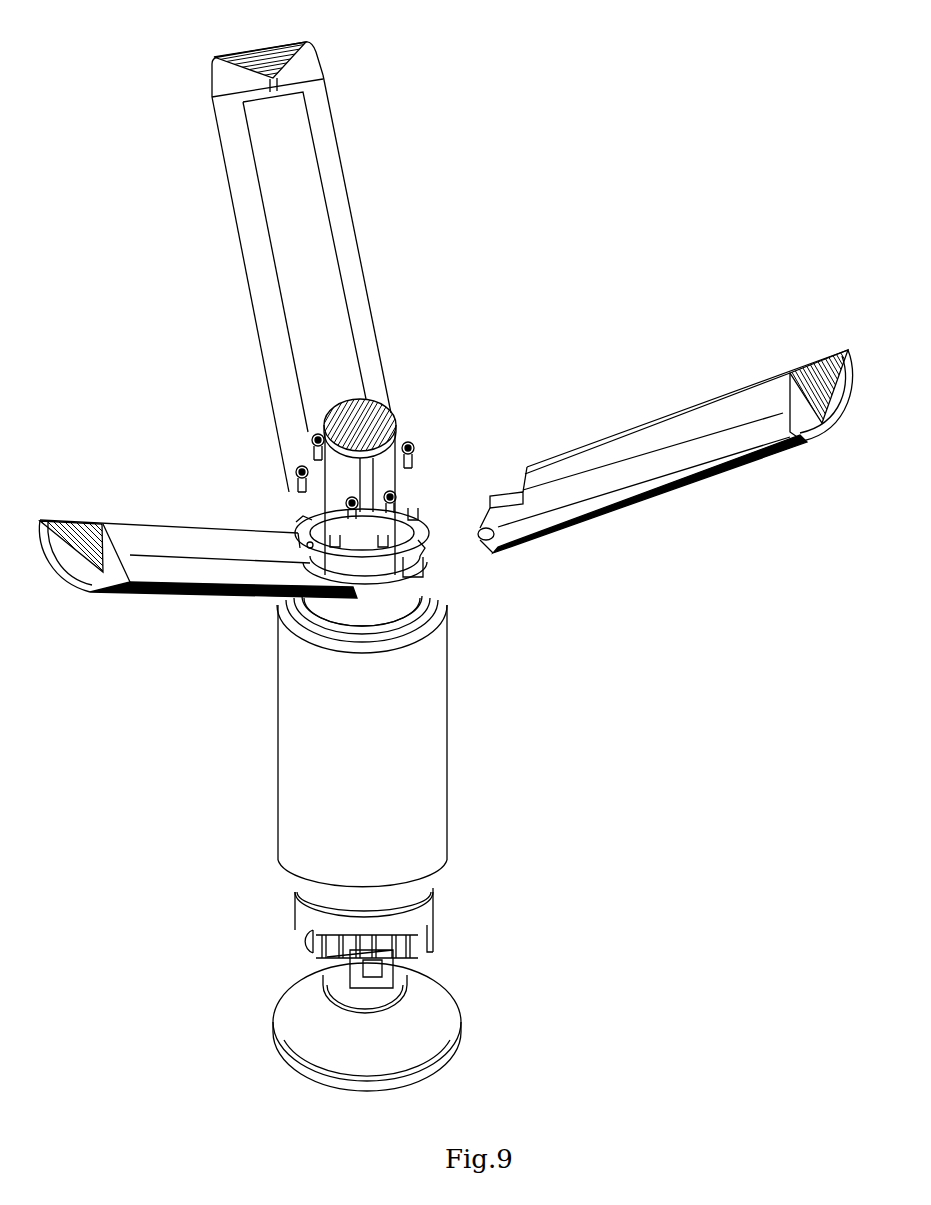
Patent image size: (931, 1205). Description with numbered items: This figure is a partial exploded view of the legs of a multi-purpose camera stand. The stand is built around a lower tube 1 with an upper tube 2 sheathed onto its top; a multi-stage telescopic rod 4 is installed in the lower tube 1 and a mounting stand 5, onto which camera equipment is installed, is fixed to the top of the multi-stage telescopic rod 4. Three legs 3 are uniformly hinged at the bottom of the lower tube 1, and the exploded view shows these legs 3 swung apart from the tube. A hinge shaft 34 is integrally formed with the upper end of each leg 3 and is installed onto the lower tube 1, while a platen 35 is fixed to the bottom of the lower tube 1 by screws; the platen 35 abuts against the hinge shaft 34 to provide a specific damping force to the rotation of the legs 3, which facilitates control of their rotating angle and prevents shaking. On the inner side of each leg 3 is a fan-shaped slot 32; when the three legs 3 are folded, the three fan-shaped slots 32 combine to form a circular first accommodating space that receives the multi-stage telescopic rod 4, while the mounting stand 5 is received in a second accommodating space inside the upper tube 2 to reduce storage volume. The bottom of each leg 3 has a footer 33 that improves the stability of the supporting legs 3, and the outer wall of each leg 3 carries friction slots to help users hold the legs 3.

The lower tube 1 is at (408, 582).
The upper tube 2 is at (393, 780).
The leg 3 is at (368, 345).
The multi-stage telescopic rod 4 is at (343, 487).
The mounting stand 5 is at (413, 987).
The fan-shaped slot 32 is at (313, 260).
The footer 33 is at (303, 63).
The hinge shaft 34 is at (500, 493).
The platen 35 is at (403, 477).